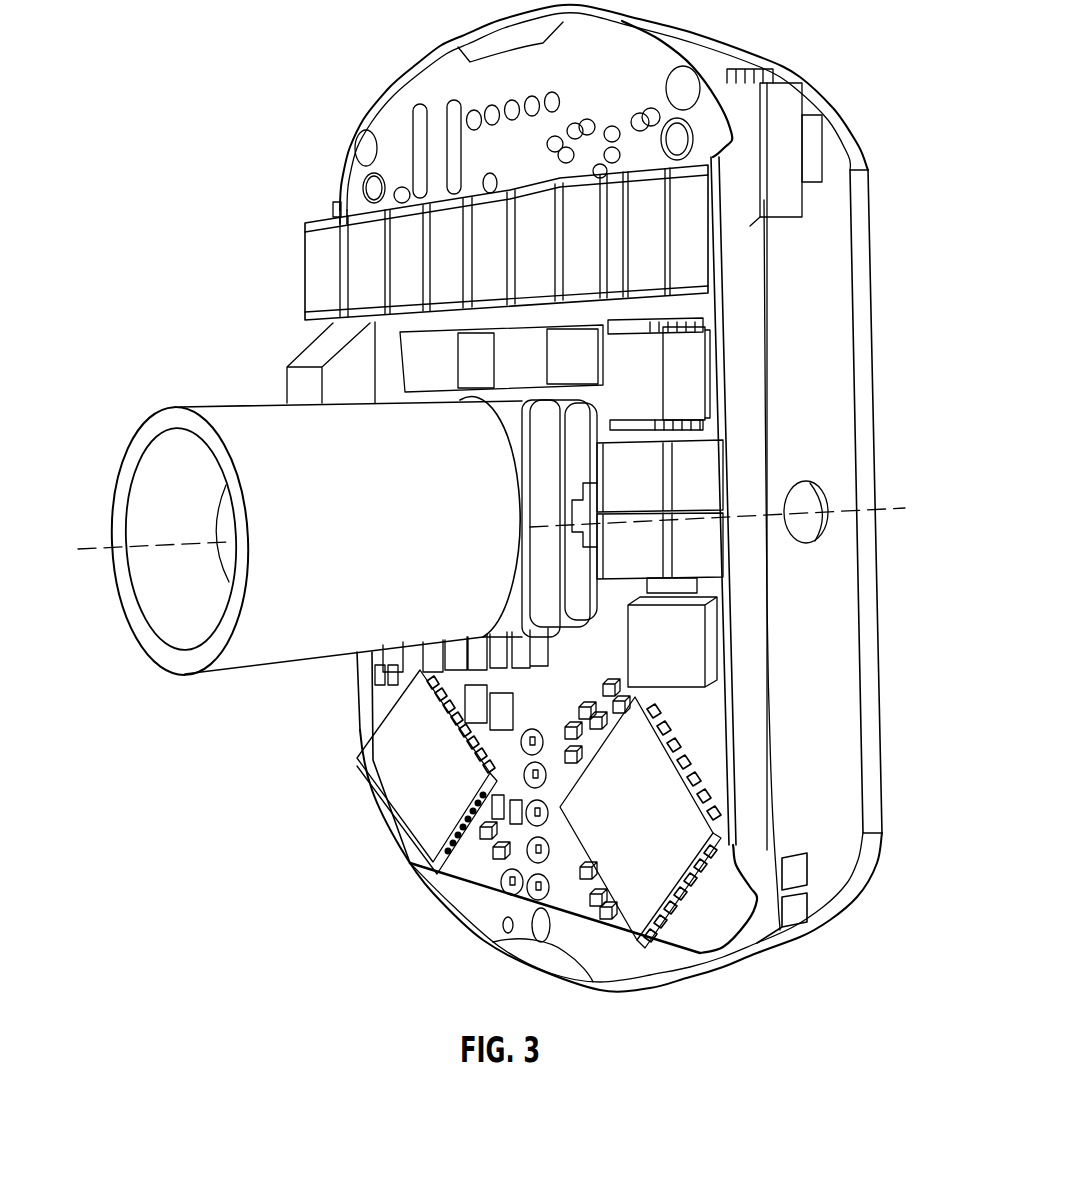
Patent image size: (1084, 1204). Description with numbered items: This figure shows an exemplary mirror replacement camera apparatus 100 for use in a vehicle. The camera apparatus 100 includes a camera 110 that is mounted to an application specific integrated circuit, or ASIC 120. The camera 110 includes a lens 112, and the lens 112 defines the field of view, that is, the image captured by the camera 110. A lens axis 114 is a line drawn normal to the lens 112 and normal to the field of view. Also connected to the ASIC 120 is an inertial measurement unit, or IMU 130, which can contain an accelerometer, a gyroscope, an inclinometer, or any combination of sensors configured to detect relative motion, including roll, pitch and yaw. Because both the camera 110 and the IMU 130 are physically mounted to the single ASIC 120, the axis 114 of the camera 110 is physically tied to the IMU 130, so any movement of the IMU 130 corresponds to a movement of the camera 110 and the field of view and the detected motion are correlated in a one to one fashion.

The camera apparatus 100 is at (882, 73).
The camera 110 is at (505, 418).
The lens 112 is at (227, 518).
The lens axis 114 is at (110, 546).
The application specific integrated circuit (ASIC) 120 is at (727, 419).
The inertial measurement unit (IMU) 130 is at (700, 636).